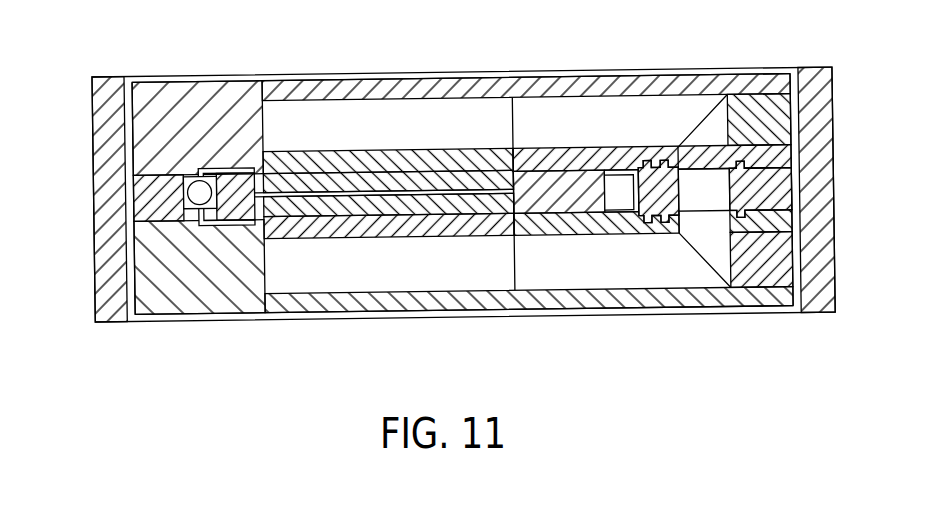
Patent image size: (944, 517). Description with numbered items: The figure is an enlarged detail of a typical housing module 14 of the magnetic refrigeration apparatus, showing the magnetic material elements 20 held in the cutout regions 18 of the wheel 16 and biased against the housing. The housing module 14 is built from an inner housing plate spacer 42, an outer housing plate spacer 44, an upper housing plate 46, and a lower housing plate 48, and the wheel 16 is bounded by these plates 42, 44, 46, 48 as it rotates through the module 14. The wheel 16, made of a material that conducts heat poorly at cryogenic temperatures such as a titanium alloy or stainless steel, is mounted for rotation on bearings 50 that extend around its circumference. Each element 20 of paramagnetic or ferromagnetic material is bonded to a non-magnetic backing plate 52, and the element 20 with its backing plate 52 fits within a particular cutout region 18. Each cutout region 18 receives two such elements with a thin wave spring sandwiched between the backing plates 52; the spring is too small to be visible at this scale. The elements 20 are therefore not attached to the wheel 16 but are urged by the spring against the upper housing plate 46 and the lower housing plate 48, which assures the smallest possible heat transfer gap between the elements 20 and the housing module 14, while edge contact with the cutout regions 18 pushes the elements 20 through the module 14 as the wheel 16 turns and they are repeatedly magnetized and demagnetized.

The housing module 14 is at (595, 315).
The wheel 16 is at (566, 181).
The cutout region 18 is at (341, 225).
The element 20 is at (394, 181).
The inner housing plate spacer 42 is at (128, 205).
The outer housing plate spacer 44 is at (790, 206).
The upper housing plate 46 is at (211, 83).
The lower housing plate 48 is at (190, 319).
The bearing 50 is at (189, 178).
The backing plate 52 is at (428, 200).